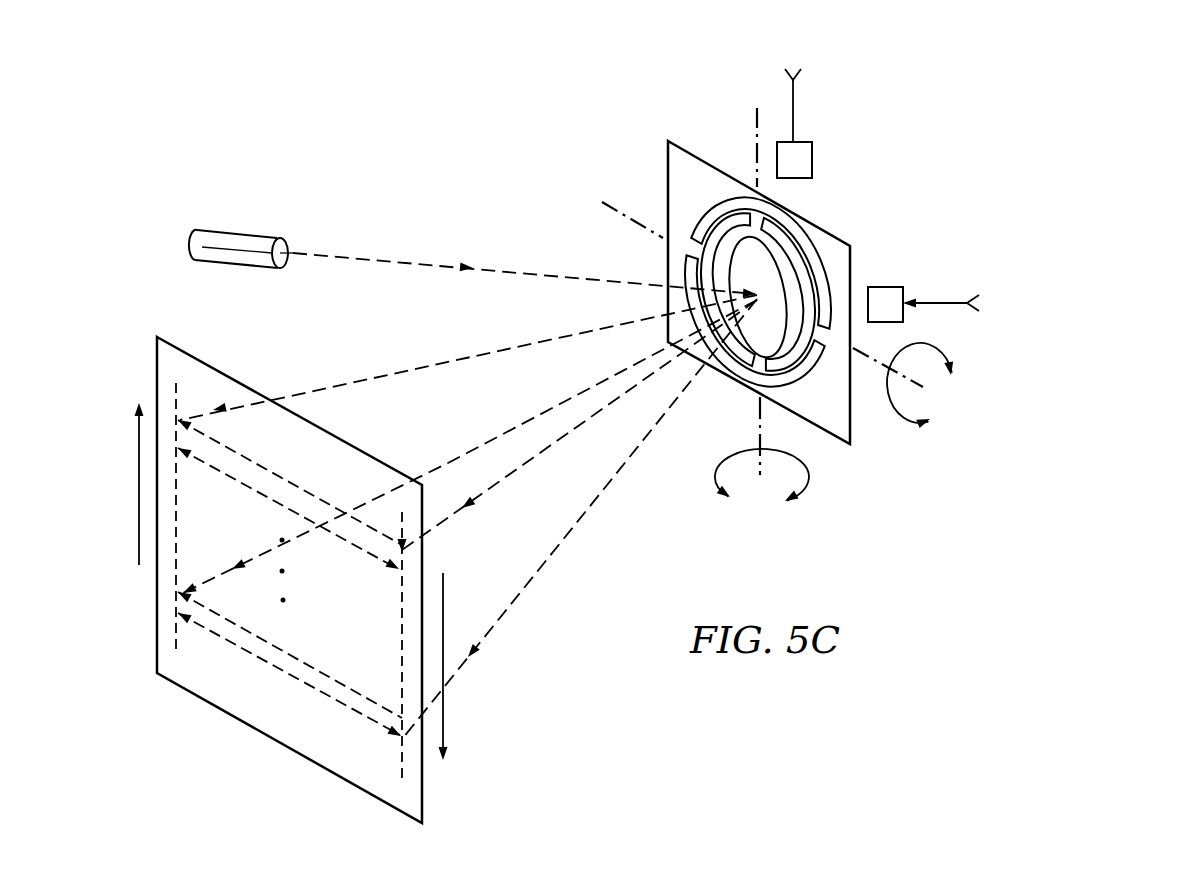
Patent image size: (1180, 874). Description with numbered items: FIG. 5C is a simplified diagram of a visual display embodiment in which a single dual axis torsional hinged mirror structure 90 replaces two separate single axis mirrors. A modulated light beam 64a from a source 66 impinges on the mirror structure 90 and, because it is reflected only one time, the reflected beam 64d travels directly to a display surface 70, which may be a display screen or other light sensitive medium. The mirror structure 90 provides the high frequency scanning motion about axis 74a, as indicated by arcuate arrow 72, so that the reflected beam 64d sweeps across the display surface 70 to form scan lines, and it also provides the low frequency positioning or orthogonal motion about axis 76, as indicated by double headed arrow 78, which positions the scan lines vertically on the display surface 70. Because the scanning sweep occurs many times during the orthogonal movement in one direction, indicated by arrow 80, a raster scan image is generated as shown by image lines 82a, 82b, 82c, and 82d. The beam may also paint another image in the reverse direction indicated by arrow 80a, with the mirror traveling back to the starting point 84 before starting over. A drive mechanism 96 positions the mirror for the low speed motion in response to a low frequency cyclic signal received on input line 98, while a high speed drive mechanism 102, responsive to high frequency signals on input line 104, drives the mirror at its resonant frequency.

The source 66 is at (240, 232).
The light beam 64a is at (398, 261).
The reflected beam 64d is at (410, 367).
The display surface 70 is at (307, 747).
The arcuate arrow 72 is at (712, 478).
The axis 74a is at (753, 120).
The axis 76 is at (608, 212).
The double headed arrow 78 is at (918, 426).
The arrow 80 is at (445, 712).
The arrow 80a is at (139, 503).
The image line 82a is at (242, 455).
The image line 82b is at (250, 485).
The image line 82c is at (332, 675).
The image line 82d is at (250, 655).
The starting point 84 is at (425, 552).
The mirror structure 90 is at (866, 215).
The drive mechanism 96 is at (884, 287).
The input line 98 is at (937, 303).
The high speed drive mechanism 102 is at (813, 158).
The input line 104 is at (795, 118).